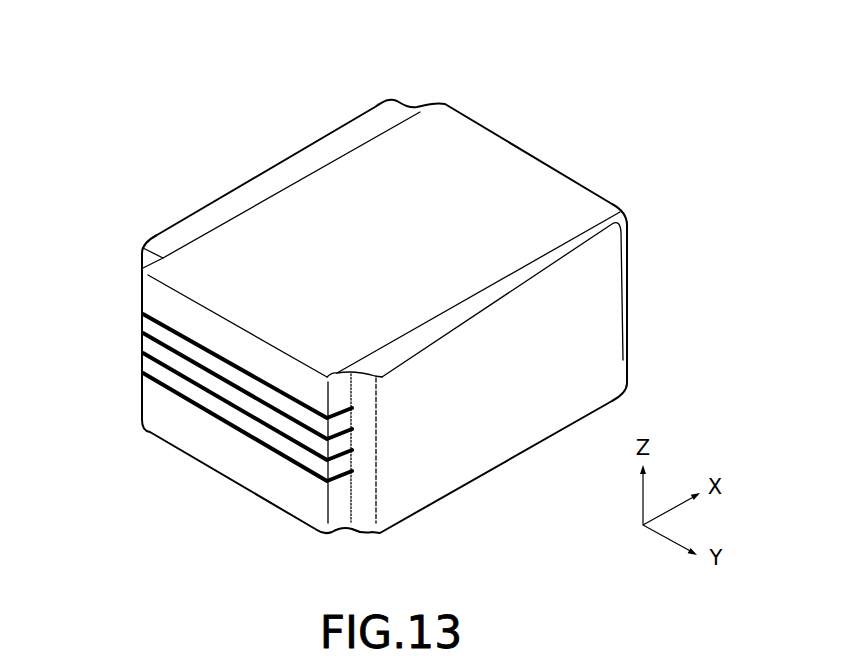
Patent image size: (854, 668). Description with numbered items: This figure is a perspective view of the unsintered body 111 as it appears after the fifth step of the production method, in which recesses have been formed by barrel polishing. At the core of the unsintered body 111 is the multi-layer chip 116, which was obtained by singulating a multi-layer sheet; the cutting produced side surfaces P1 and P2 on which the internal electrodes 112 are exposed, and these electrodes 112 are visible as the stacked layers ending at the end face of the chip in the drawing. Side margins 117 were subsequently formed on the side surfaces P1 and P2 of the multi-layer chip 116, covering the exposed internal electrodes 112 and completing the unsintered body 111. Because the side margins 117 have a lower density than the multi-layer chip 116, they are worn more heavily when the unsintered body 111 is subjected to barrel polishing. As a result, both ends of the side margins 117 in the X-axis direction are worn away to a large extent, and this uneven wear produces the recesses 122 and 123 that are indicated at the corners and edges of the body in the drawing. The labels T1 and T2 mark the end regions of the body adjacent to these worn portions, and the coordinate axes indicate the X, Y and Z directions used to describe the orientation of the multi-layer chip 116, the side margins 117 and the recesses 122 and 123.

The unsintered body 111 is at (592, 119).
The first internal electrodes 112 is at (273, 448).
The multi-layer chip 116 is at (463, 143).
The side margins 117 is at (305, 160).
The recess 122 is at (136, 331).
The recess 123 is at (413, 97).
The first end surface T1 is at (180, 420).
The second end surface T2 is at (543, 157).
The side surface P1 is at (485, 289).
The side surface P2 is at (277, 190).